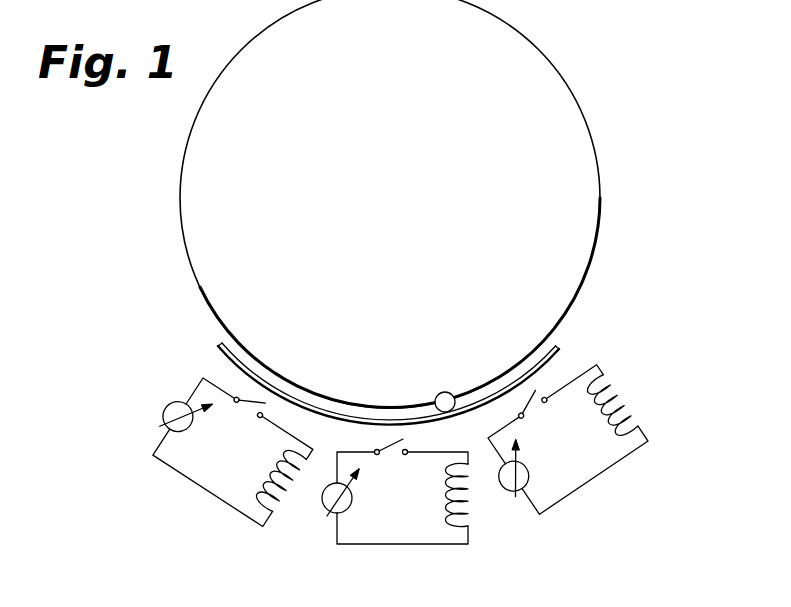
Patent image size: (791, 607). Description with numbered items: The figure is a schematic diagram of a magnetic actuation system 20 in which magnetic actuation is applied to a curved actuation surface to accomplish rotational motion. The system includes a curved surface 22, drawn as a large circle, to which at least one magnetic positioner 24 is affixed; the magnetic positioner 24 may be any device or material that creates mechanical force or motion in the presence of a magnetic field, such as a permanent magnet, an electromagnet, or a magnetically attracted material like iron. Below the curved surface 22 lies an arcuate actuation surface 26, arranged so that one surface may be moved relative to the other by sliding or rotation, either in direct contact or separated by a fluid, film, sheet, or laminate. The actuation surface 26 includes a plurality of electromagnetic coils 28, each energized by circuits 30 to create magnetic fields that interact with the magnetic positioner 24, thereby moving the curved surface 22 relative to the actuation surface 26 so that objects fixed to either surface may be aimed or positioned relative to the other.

The magnetic actuation system 20 is at (127, 510).
The curved surface 22 is at (590, 270).
The magnetic positioner 24 is at (441, 392).
The actuation surface 26 is at (567, 348).
The electromagnetic coils 28 is at (288, 505).
The circuits 30 is at (183, 478).